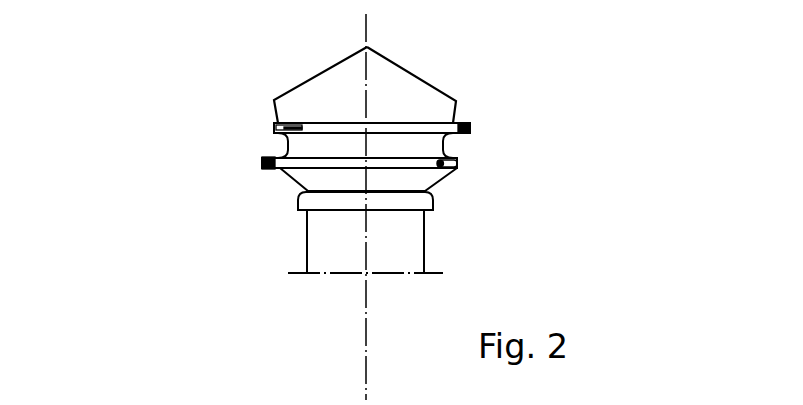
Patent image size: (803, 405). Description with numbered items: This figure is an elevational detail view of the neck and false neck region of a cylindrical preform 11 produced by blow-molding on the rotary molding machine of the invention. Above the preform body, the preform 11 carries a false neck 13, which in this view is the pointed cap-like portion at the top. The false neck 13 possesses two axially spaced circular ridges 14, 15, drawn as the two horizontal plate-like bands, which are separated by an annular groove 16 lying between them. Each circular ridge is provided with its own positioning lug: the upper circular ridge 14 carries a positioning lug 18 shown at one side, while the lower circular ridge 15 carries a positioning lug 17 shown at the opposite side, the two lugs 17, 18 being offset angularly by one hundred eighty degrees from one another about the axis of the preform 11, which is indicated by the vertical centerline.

The cylindrical preform 11 is at (403, 248).
The false neck 13 is at (396, 75).
The circular ridge 14 is at (275, 124).
The circular ridge 15 is at (455, 169).
The annular groove 16 is at (445, 147).
The positioning lug 17 is at (263, 163).
The positioning lug 18 is at (470, 128).